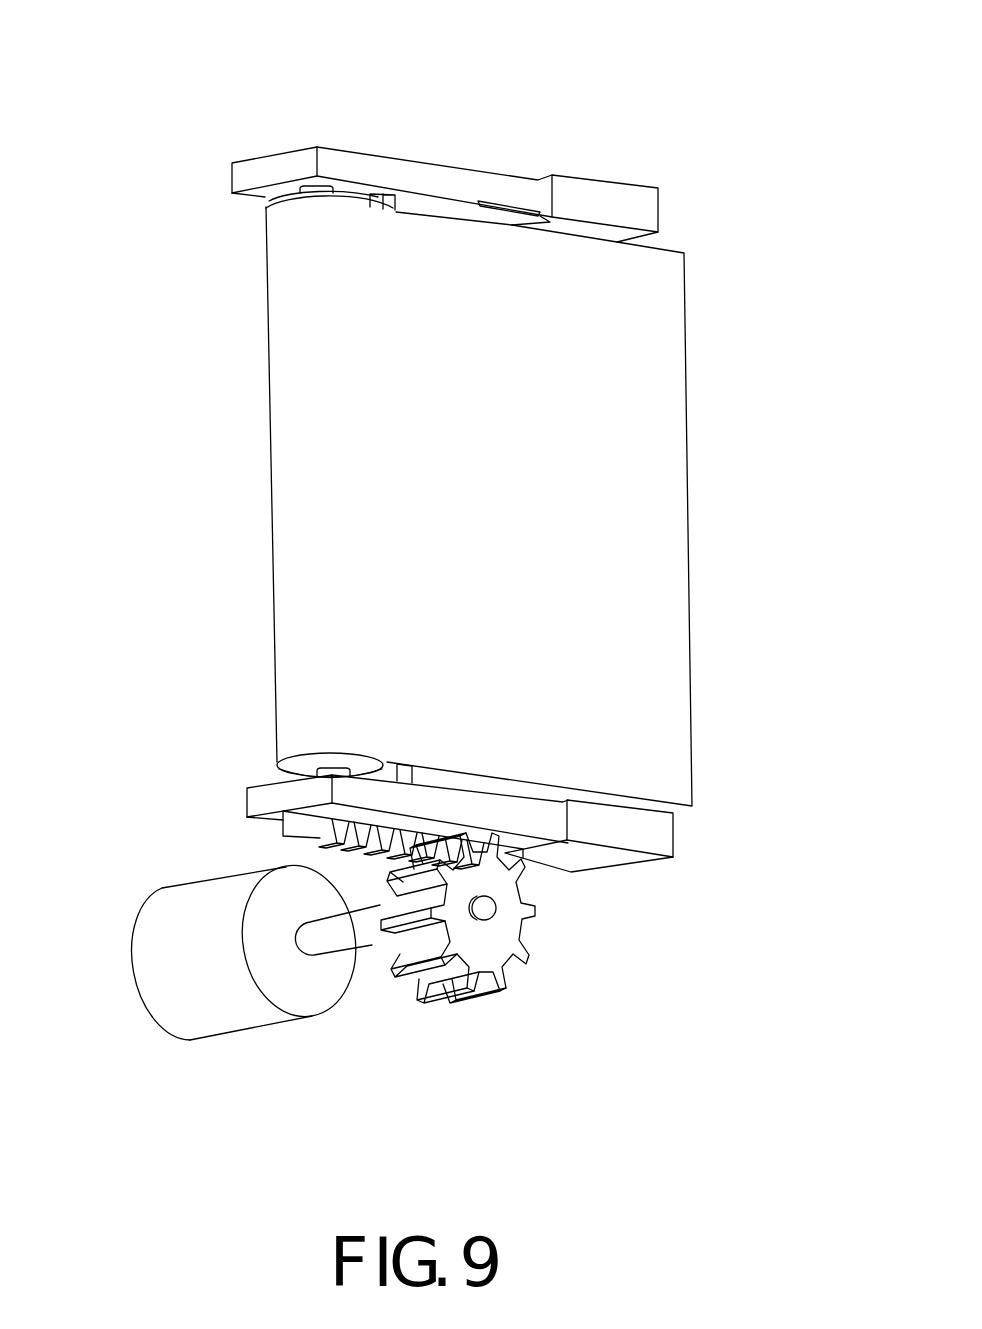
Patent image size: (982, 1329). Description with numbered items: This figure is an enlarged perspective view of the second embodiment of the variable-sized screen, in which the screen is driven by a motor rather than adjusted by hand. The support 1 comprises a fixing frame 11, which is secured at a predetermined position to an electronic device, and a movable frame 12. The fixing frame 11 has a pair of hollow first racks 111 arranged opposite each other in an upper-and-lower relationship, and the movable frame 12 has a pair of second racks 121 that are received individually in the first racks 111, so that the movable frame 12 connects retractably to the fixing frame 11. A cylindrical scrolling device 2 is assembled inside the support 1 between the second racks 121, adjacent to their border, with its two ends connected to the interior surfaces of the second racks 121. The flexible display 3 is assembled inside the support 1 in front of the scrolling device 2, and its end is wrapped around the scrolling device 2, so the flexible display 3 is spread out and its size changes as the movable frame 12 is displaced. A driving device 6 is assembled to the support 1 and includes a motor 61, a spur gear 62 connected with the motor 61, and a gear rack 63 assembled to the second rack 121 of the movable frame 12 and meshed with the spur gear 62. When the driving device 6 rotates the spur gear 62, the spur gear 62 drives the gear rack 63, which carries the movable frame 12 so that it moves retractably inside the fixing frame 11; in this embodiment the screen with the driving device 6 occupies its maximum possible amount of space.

The support 1 is at (440, 493).
The fixing frame 11 is at (611, 174).
The movable frame 12 is at (469, 160).
The second rack 121 is at (370, 796).
The first rack 111 is at (628, 838).
The scrolling device 2 is at (330, 485).
The flexible display 3 is at (708, 590).
The driving device 6 is at (288, 1007).
The motor 61 is at (157, 921).
The spur gear 62 is at (459, 965).
The gear rack 63 is at (312, 830).